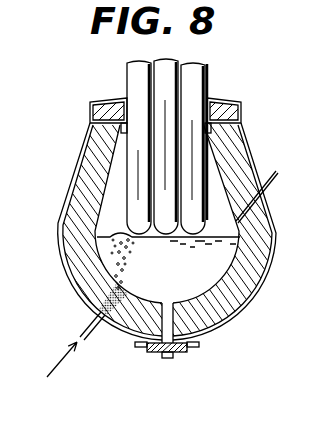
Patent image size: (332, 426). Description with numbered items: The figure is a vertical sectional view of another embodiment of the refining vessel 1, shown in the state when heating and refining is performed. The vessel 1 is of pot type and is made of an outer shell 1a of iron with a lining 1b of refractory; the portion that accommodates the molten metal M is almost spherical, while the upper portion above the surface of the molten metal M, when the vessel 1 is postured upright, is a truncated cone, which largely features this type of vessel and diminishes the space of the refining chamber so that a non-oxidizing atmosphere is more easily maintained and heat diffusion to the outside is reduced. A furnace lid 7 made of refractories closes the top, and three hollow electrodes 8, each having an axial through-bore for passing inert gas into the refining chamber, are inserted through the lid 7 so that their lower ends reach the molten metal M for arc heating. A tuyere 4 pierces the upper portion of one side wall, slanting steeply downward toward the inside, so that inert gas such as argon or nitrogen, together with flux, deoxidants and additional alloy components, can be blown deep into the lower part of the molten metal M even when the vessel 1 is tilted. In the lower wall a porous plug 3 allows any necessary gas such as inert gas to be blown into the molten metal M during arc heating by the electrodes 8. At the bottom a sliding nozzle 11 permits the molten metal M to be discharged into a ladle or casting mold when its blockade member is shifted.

The refining vessel 1 is at (163, 220).
The outer shell 1a is at (68, 192).
The lining 1b is at (80, 272).
The porous plug 3 is at (90, 325).
The tuyere 4 is at (272, 186).
The furnace lid 7 is at (110, 107).
The hollow electrodes 8 is at (205, 78).
The sliding nozzle 11 is at (177, 357).
The molten metal M is at (177, 278).